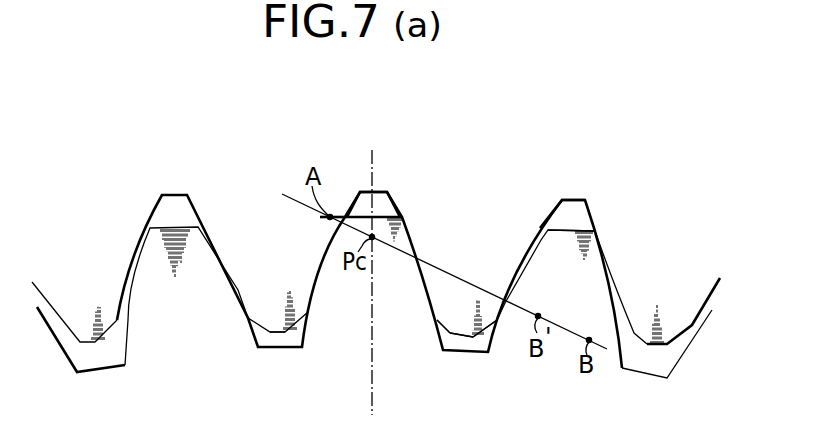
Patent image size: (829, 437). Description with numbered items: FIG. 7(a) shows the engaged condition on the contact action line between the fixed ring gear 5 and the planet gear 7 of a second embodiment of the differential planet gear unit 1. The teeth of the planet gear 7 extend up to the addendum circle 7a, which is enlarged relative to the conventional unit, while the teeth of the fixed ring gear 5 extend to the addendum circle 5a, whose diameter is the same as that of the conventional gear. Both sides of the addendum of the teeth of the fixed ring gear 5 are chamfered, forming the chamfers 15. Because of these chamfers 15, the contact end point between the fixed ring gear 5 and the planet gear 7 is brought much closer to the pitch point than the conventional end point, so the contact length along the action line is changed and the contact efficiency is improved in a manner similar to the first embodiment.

The gear pair / meshing tooth profiles 1 is at (650, 122).
The fixed ring gear 5 is at (480, 235).
The addendum circle of the fixed ring gear 5a is at (280, 333).
The planet gear 7 is at (354, 343).
The addendum circle of the planet gear 7a is at (383, 217).
The chamfers 15 is at (450, 335).